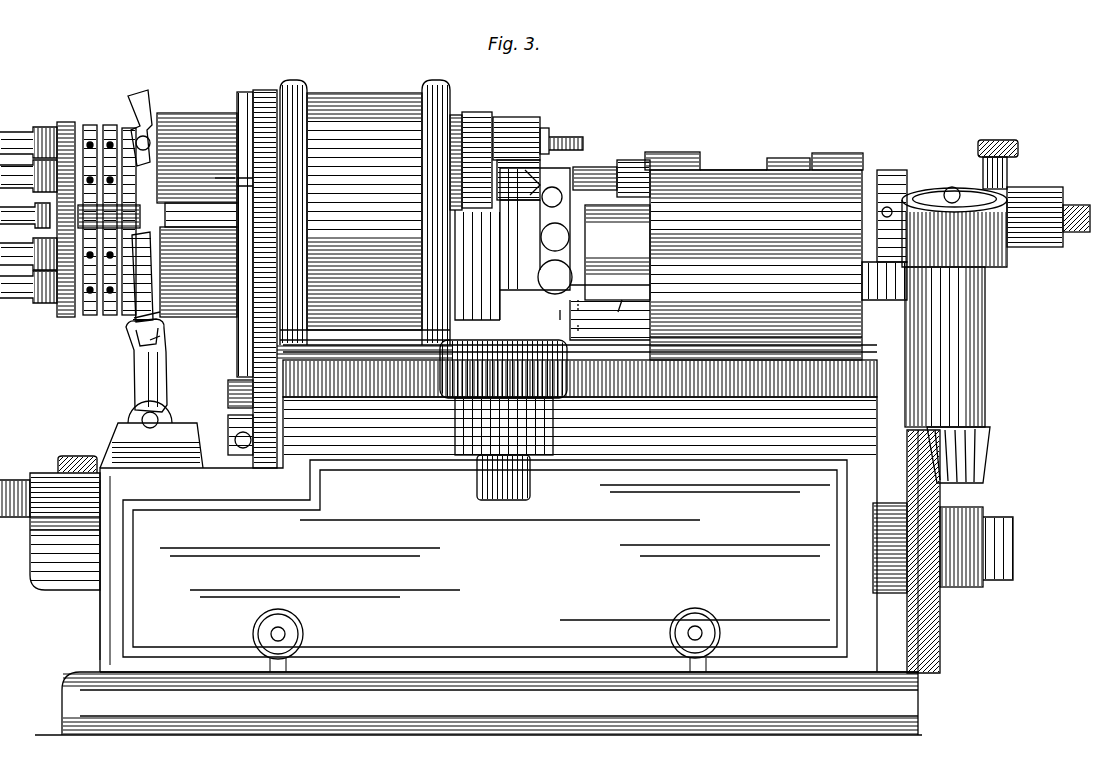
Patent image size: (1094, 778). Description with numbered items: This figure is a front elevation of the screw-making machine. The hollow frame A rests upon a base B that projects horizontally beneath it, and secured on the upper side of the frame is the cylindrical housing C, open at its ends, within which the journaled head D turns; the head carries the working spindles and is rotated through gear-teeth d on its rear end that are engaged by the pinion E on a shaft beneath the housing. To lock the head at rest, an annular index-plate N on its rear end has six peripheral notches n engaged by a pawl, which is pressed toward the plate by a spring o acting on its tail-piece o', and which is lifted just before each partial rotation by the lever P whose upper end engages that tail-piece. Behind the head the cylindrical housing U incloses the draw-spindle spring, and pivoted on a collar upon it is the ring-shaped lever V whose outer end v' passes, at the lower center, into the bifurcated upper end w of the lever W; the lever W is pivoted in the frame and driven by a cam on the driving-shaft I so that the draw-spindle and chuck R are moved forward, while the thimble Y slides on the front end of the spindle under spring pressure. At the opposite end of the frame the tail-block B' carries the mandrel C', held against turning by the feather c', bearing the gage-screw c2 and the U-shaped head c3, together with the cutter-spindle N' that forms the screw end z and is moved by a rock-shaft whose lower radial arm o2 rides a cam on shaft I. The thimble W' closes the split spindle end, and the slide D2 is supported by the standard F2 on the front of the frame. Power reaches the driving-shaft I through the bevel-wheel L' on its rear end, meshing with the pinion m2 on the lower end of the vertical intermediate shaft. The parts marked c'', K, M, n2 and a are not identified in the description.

The hollow frame A is at (492, 534).
The base B is at (478, 716).
The tail-block B' is at (756, 265).
The cylindrical housing C is at (364, 218).
The mandrel C' is at (670, 194).
The feather c' is at (560, 322).
The gage-screw c2 is at (585, 336).
The U-shaped head c3 is at (586, 313).
The cam roller c'' is at (619, 316).
The journaled head D is at (463, 115).
The slide D2 is at (595, 170).
The gear-teeth d is at (266, 92).
The pinion E is at (580, 389).
The standard F2 is at (503, 420).
The driving-shaft I is at (947, 548).
The hand knob K is at (1034, 193).
The bevel-wheel L' is at (934, 551).
The bracket and drum M is at (988, 428).
The pinion m2 is at (973, 455).
The annular plate N is at (243, 221).
The cutter-spindle N' is at (733, 157).
The peripheral notches n is at (217, 172).
The block n2 is at (788, 154).
The spring o is at (536, 244).
The tail-piece o' is at (236, 380).
The lower radial arm o2 is at (815, 153).
The lever P is at (228, 420).
The chuck R is at (546, 135).
The cylindrical housing U is at (197, 217).
The ring-shaped lever V is at (152, 120).
The outer end of lever v' is at (131, 222).
The lever W is at (151, 393).
The thimble W' is at (631, 272).
The bifurcated upper end w is at (167, 346).
The thimble Y is at (516, 148).
The screw end z is at (572, 141).
The handle a is at (297, 421).